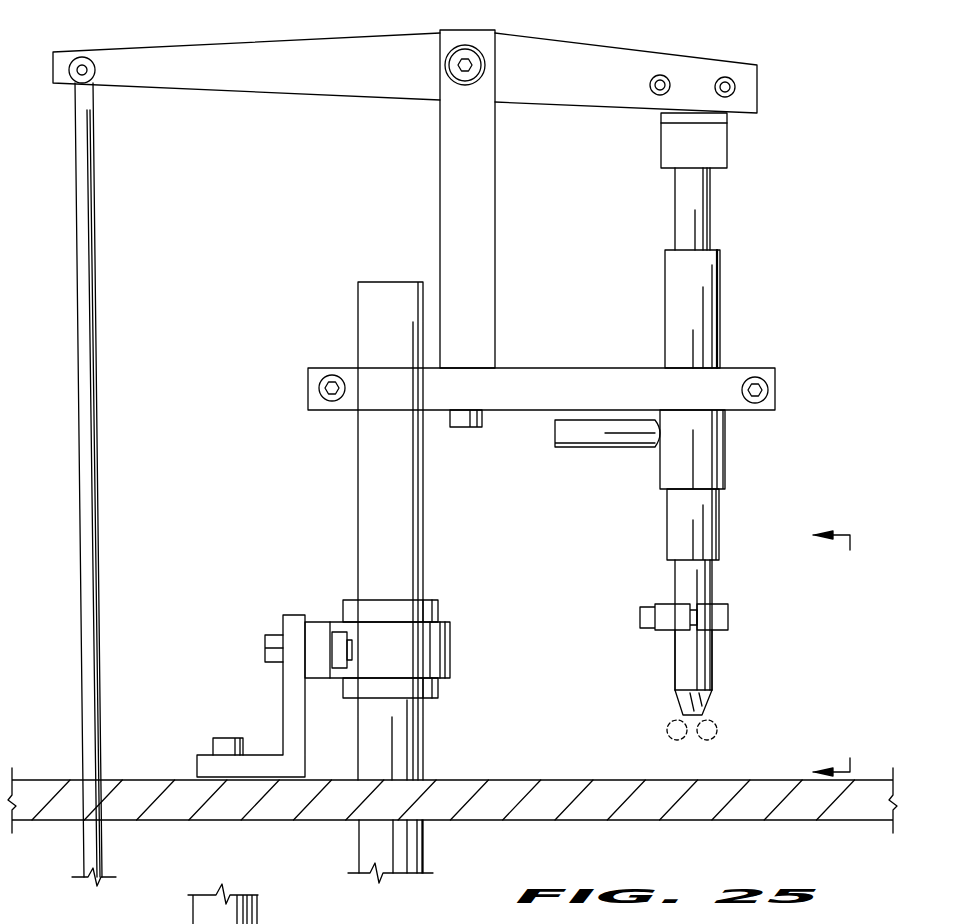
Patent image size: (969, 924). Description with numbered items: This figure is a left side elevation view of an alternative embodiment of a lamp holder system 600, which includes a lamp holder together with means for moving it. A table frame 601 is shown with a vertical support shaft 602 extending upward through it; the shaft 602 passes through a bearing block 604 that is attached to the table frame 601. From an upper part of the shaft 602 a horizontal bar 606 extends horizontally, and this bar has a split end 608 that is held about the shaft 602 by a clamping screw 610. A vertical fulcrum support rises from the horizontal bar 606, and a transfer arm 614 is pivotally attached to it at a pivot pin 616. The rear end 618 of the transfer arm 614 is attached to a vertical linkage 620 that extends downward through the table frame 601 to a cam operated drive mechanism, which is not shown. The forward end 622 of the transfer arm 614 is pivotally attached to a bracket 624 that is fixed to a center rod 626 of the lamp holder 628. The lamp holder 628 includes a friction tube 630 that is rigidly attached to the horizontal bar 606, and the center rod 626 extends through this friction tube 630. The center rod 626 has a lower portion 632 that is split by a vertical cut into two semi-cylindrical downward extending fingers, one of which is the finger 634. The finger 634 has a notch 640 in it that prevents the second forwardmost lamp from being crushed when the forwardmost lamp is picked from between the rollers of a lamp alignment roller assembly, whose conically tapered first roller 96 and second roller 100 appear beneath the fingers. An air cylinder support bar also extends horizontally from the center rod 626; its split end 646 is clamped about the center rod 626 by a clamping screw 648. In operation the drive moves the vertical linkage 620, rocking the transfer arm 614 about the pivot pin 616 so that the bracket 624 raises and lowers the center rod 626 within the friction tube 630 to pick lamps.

The lamp holder system 600 is at (658, 44).
The table frame 601 is at (555, 778).
The vertical support shaft 602 is at (397, 753).
The bearing block 604 is at (427, 651).
The horizontal bar 606 is at (575, 372).
The split end 608 is at (308, 386).
The clamping screw 610 is at (330, 392).
The transfer arm 614 is at (523, 50).
The pivot pin 616 is at (458, 55).
The rear end 618 is at (62, 55).
The vertical linkage 620 is at (83, 228).
The forward end 622 is at (758, 80).
The bracket 624 is at (717, 145).
The center rod 626 is at (696, 205).
The lamp holder 628 is at (722, 275).
The friction tube 630 is at (697, 335).
The lower portion 632 is at (632, 717).
The finger 634 is at (683, 680).
The notch 640 is at (700, 703).
The split end 646 is at (724, 620).
The clamping screw 648 is at (645, 607).
The first roller 96 is at (718, 733).
The second roller 100 is at (678, 740).